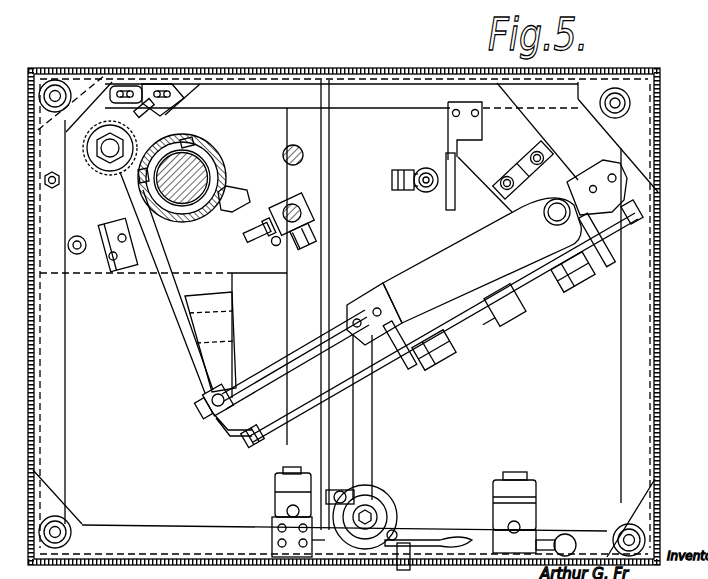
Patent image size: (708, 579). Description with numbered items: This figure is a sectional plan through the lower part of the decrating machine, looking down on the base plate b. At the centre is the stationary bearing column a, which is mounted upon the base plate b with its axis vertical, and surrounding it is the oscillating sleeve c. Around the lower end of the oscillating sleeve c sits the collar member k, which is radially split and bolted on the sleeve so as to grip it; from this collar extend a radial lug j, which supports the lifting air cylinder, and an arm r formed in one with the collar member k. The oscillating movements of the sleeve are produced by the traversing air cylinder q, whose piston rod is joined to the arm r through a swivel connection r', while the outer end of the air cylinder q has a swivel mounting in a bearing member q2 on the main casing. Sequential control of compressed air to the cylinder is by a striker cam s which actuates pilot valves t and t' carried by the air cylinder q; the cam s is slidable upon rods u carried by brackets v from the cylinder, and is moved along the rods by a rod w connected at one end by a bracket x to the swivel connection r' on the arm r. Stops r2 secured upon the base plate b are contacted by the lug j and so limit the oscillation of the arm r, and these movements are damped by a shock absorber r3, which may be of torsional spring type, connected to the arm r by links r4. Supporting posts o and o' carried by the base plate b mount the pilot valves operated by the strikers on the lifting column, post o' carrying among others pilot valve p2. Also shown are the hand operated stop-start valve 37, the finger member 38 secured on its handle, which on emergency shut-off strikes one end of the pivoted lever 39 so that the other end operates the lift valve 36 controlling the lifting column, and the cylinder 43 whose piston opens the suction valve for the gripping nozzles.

The lug j is at (143, 143).
The oscillating sleeve c is at (190, 143).
The stationary bearing column a is at (200, 183).
The collar member k is at (220, 163).
The supporting post o is at (319, 172).
The supporting post o' is at (314, 223).
The pilot valve p2 is at (253, 230).
The base plate b is at (245, 260).
The stops r2 is at (141, 102).
The arm r is at (177, 282).
The swivel connection r' is at (184, 396).
The bracket x is at (232, 432).
The cylinder 43 is at (416, 167).
The traversing air cylinder q is at (440, 268).
The bearing member q2 is at (551, 177).
The rods u is at (461, 320).
The brackets v is at (398, 350).
The pilot valve t is at (439, 365).
The striker cam s is at (489, 310).
The pilot valve t' is at (573, 301).
The rod w is at (365, 370).
The links r4 is at (362, 450).
The shock absorber r3 is at (385, 500).
The pivoted lever 39 is at (432, 540).
The lift valve 36 is at (273, 505).
The stop-start valve 37 is at (522, 500).
The finger member 38 is at (562, 533).